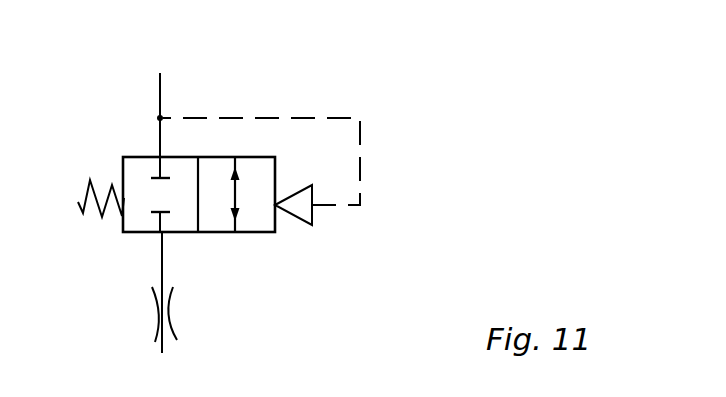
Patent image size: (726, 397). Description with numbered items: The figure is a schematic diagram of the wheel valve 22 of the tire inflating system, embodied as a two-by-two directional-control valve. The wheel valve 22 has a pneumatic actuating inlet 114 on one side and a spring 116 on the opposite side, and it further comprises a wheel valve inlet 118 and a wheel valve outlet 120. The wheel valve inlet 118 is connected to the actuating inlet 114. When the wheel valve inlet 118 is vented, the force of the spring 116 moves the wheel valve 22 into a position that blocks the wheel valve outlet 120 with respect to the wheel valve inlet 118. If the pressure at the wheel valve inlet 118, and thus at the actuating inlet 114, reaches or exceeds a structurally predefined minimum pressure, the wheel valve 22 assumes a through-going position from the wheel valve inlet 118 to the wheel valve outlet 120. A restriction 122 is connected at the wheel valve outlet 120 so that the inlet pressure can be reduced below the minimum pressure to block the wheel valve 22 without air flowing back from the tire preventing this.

The wheel valve 22 is at (286, 94).
The pneumatic actuating inlet 114 is at (298, 239).
The spring 116 is at (102, 218).
The wheel valve inlet 118 is at (160, 97).
The wheel valve outlet 120 is at (167, 343).
The restriction 122 is at (178, 298).